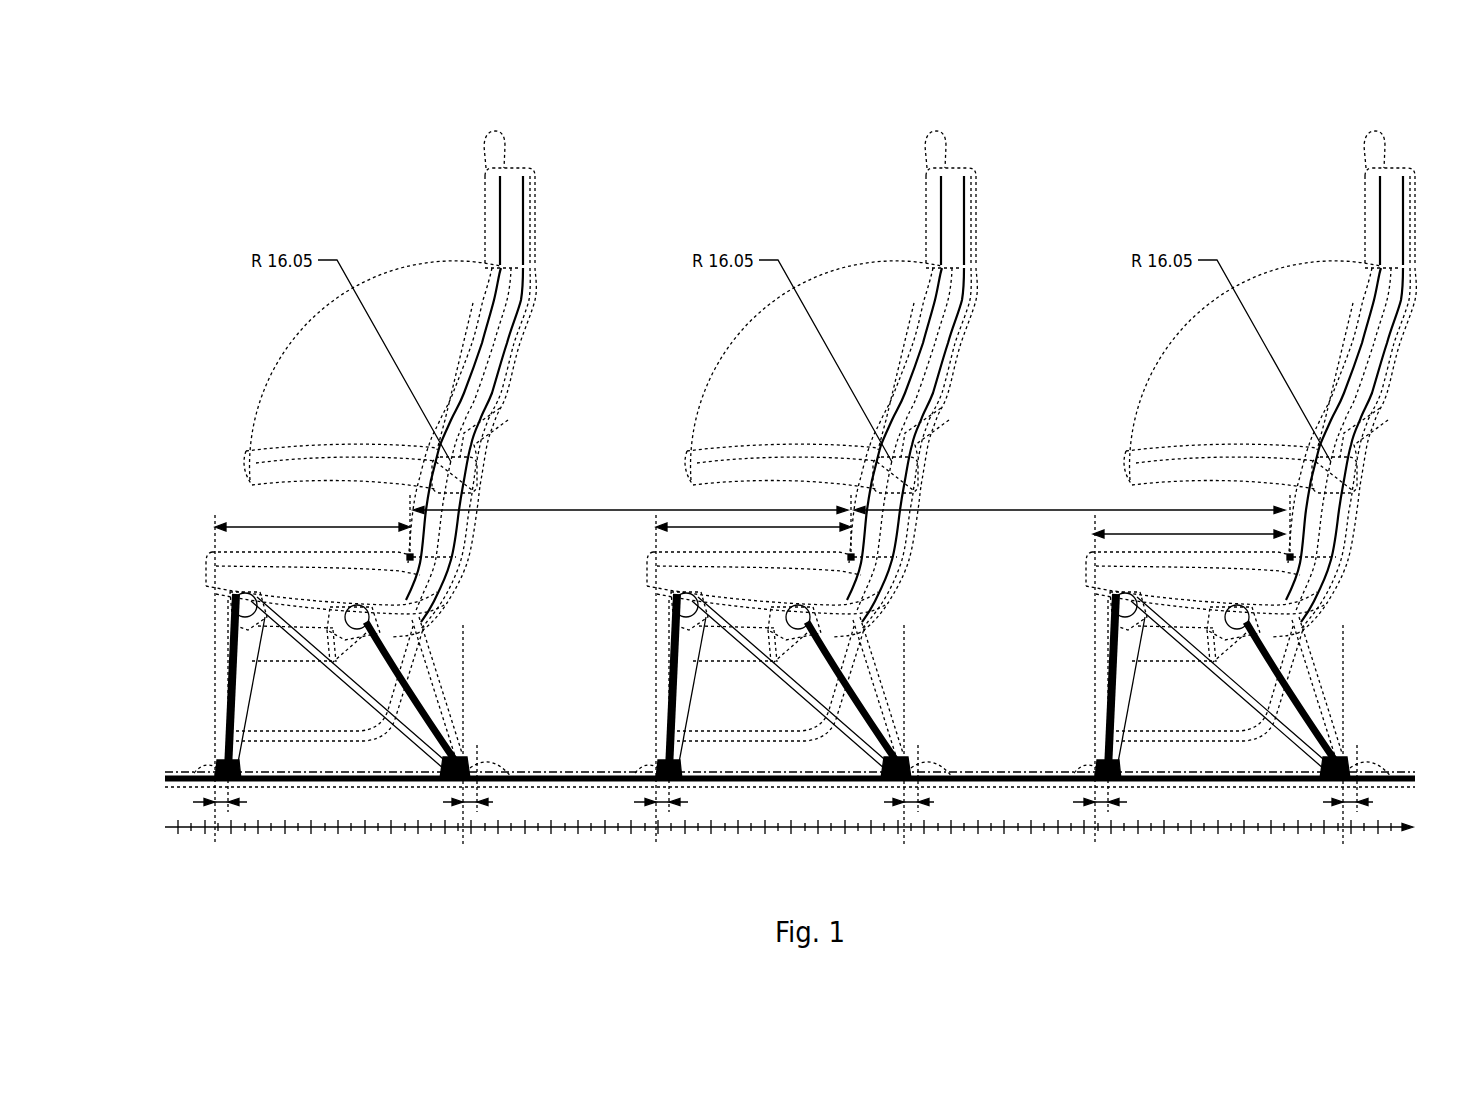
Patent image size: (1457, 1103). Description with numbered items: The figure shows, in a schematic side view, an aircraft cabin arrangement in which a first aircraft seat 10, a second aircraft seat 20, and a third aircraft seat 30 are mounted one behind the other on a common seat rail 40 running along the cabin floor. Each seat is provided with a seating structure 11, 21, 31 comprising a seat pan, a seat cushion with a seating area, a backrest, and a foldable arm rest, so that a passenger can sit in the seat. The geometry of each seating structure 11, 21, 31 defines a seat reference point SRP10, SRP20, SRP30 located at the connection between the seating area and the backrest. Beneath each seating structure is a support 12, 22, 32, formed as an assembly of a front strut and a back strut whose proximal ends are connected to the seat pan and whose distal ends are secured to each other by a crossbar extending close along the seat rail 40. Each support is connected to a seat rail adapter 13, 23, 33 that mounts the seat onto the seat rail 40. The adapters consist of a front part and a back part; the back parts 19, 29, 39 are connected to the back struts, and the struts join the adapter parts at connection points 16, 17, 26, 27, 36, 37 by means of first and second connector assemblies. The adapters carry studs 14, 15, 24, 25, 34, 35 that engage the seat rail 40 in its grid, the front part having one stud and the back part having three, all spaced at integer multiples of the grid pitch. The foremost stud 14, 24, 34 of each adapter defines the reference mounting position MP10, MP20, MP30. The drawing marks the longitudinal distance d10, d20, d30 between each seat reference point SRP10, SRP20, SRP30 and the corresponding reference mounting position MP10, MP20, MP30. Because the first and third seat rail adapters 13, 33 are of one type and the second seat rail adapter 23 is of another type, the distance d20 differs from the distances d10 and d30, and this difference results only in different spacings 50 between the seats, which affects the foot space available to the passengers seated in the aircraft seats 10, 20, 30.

The first aircraft seat 10 is at (438, 112).
The seating structure 11 is at (464, 402).
The support 12 is at (207, 681).
The seat rail adapter 13 is at (347, 683).
The stud 14 is at (206, 786).
The stud 15 is at (490, 785).
The connection point 16 is at (191, 706).
The connection point 17 is at (464, 754).
The back seat rail adapter part 19 is at (330, 682).
The second aircraft seat 20 is at (894, 112).
The seating structure 21 is at (905, 402).
The support 22 is at (645, 681).
The seat rail adapter 23 is at (788, 683).
The stud 24 is at (649, 786).
The stud 25 is at (931, 785).
The connection point 26 is at (632, 706).
The connection point 27 is at (904, 754).
The back seat rail adapter part 29 is at (771, 682).
The third aircraft seat 30 is at (1334, 112).
The seating structure 31 is at (1344, 402).
The support 32 is at (1085, 681).
The seat rail adapter 33 is at (1227, 683).
The stud 34 is at (1084, 786).
The stud 35 is at (1369, 785).
The connection point 36 is at (1070, 706).
The connection point 37 is at (1343, 754).
The back seat rail adapter part 39 is at (1210, 682).
The seat rail 40 is at (995, 792).
The spacing 50 is at (564, 506).
The seat reference point SRP10 is at (423, 563).
The seat reference point SRP20 is at (864, 563).
The seat reference point SRP30 is at (1303, 563).
The reference mounting position MP10 is at (215, 776).
The reference mounting position MP20 is at (656, 776).
The reference mounting position MP30 is at (1094, 776).
The distance d10 is at (272, 529).
The distance d20 is at (717, 529).
The distance d30 is at (1170, 534).